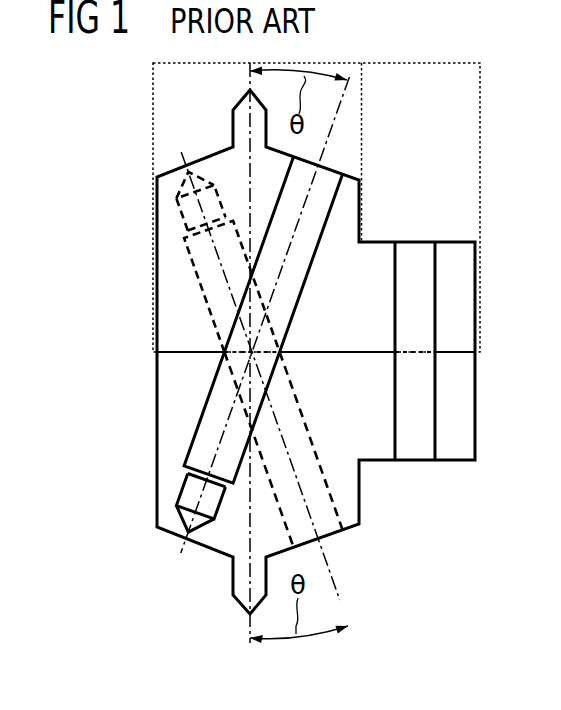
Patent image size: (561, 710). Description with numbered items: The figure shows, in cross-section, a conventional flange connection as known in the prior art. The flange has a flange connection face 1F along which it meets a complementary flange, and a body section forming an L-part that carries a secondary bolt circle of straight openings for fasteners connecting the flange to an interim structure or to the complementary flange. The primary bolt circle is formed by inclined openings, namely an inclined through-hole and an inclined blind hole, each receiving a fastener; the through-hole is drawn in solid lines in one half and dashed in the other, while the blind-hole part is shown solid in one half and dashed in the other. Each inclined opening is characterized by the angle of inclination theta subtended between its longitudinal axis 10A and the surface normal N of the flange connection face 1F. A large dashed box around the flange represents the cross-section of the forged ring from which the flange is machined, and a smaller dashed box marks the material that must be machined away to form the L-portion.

The flange connection face 1F is at (173, 351).
The longitudinal axis 10A is at (340, 105).
The surface normal N is at (250, 638).